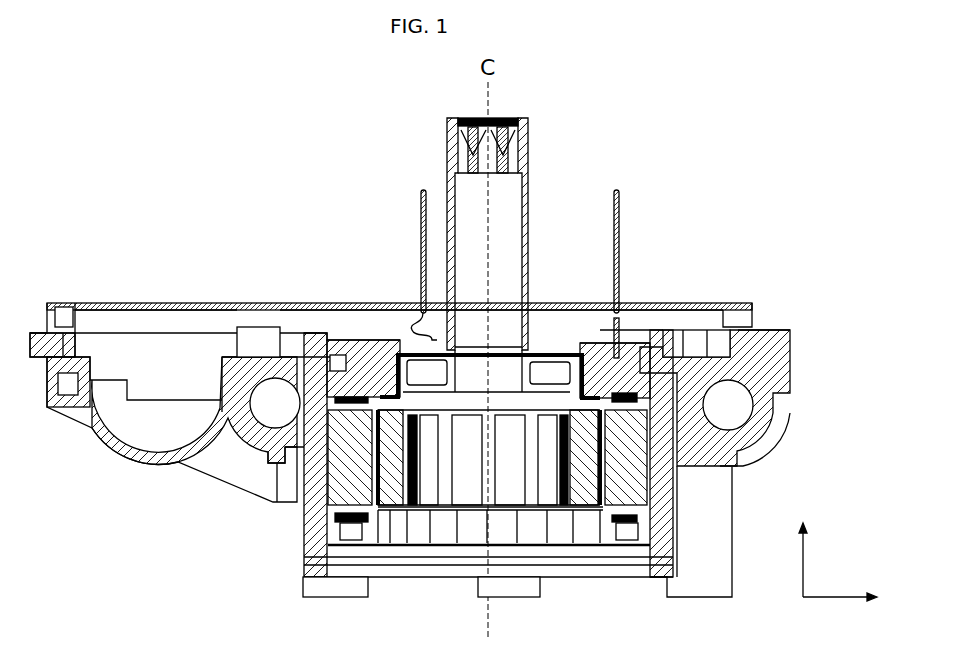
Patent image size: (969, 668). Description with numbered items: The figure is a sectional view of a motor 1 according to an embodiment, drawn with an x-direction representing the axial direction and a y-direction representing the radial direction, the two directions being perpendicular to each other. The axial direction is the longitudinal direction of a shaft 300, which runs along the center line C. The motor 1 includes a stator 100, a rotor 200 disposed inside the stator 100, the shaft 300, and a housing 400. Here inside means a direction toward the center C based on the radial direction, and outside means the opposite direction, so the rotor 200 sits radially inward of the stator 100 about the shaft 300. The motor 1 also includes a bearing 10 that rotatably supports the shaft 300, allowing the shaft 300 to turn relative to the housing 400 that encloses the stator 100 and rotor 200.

The motor 1 is at (64, 86).
The bearing 10 is at (422, 372).
The stator 100 is at (346, 430).
The rotor 200 is at (386, 400).
The shaft 300 is at (495, 235).
The housing 400 is at (802, 387).